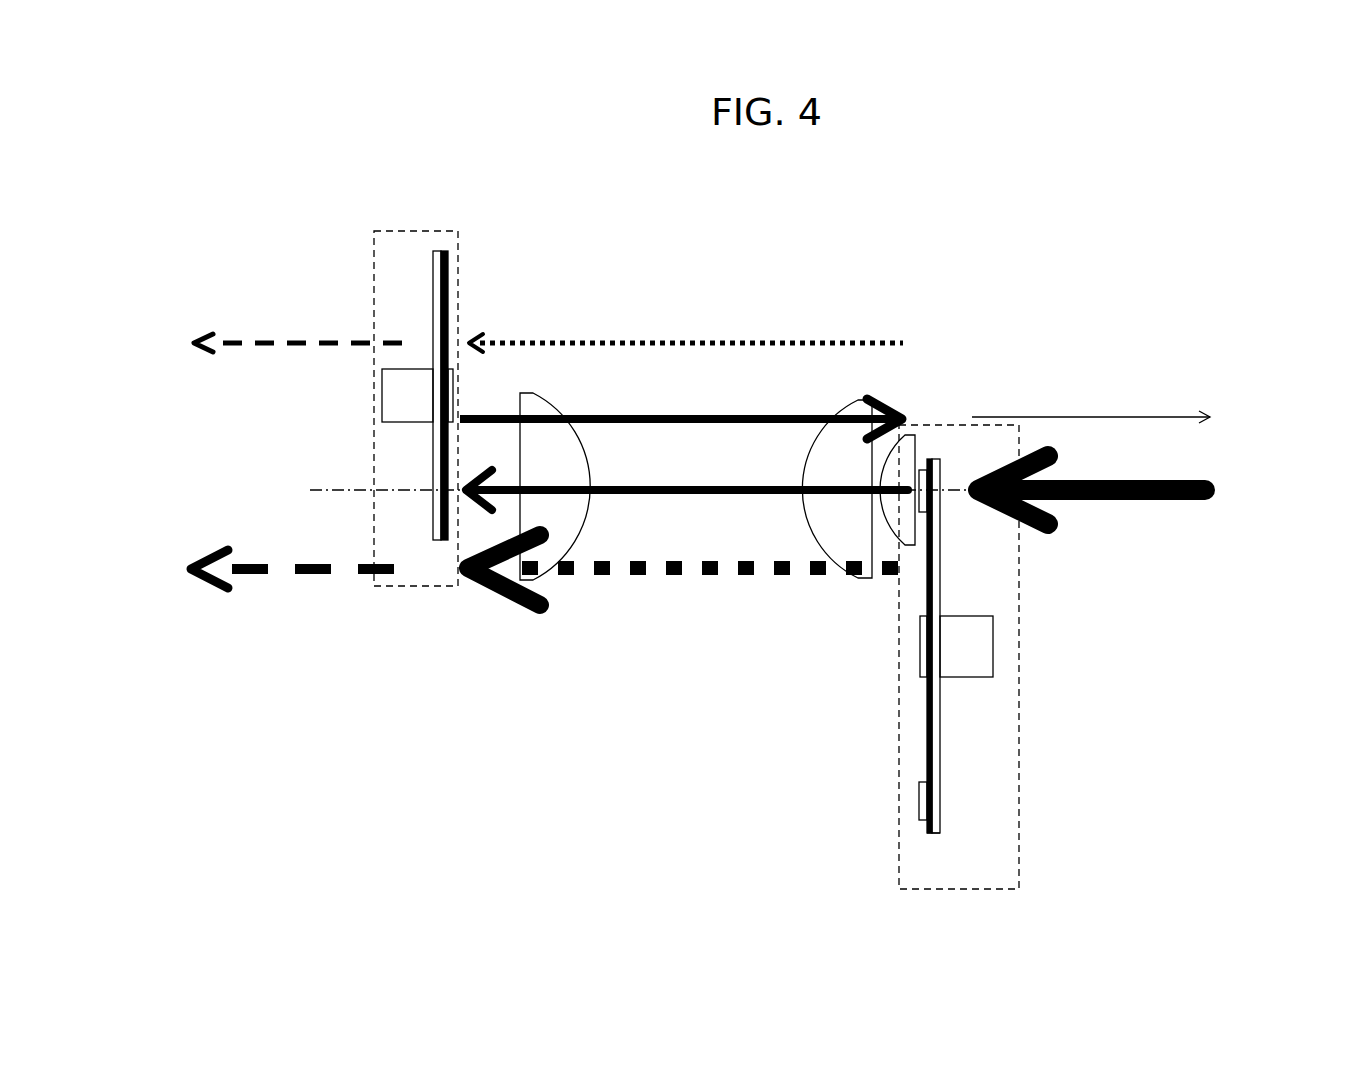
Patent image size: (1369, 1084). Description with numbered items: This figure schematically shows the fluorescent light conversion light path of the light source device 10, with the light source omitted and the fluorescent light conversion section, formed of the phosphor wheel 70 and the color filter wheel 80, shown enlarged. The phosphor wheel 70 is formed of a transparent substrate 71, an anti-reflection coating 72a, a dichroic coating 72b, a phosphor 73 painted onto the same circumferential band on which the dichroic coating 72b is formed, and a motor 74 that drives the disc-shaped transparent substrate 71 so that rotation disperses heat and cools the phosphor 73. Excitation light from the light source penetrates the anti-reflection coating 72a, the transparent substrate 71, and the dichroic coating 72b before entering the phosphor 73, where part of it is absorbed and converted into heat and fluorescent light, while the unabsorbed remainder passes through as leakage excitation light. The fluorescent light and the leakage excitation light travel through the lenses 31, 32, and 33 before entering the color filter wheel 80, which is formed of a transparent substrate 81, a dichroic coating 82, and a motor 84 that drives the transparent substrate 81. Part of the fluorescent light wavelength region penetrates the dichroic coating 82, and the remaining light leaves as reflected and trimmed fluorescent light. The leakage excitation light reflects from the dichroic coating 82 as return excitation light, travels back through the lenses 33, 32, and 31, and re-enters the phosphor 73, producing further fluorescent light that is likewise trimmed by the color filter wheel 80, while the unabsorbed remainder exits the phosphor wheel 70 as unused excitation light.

The light source device 10 is at (1136, 235).
The lens 31 is at (913, 442).
The lens 32 is at (843, 572).
The lens 33 is at (552, 580).
The phosphor wheel 70 is at (1019, 630).
The transparent substrate 71 is at (940, 826).
The anti-reflection coating 72a is at (940, 750).
The dichroic coating 72b is at (927, 825).
The phosphor 73 is at (920, 800).
The motor 74 is at (973, 677).
The color filter wheel 80 is at (438, 586).
The transparent substrate 81 is at (442, 251).
The dichroic coating 82 is at (448, 280).
The motor 84 is at (383, 413).